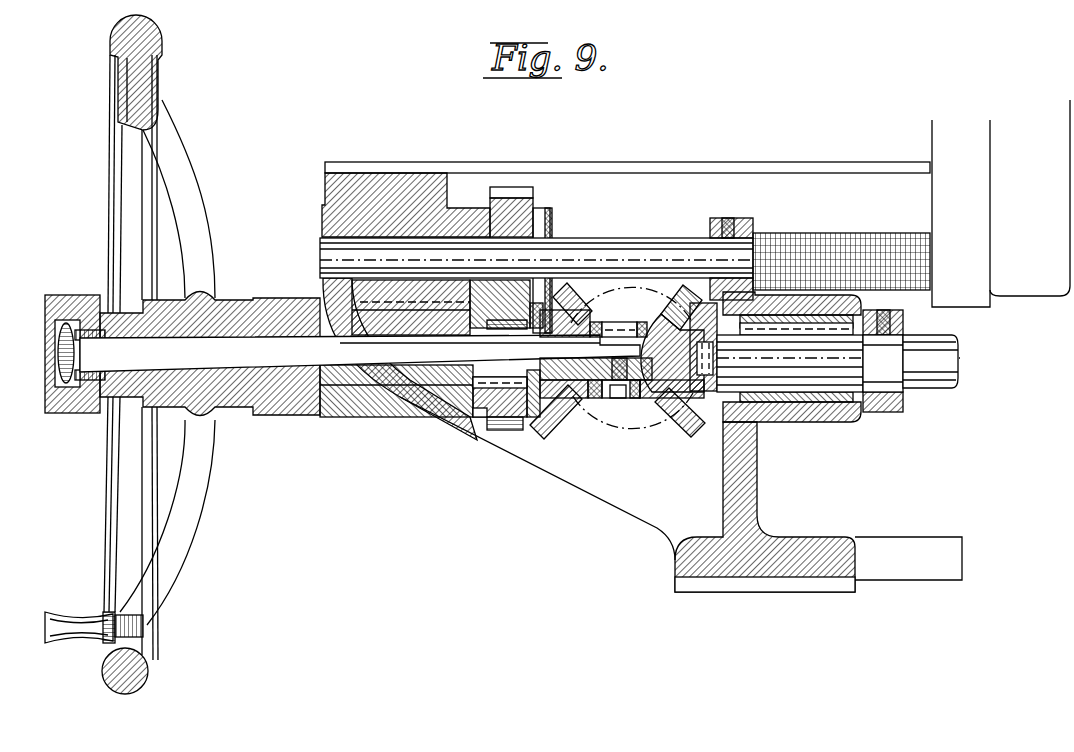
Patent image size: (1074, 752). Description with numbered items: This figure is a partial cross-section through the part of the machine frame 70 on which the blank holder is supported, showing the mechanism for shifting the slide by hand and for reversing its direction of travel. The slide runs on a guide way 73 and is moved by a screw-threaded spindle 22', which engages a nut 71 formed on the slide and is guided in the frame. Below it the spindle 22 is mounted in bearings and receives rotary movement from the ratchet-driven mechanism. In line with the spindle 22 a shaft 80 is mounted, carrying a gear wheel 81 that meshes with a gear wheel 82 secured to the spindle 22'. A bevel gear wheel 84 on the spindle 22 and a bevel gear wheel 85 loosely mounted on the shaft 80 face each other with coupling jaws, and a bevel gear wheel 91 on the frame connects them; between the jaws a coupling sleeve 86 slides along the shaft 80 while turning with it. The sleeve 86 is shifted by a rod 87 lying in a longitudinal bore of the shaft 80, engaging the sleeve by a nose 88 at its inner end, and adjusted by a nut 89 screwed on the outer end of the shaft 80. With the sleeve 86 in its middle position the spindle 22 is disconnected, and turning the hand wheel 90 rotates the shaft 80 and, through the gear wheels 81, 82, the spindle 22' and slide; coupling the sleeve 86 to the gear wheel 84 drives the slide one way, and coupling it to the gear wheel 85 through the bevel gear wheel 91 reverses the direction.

The spindle 22 is at (828, 364).
The screw-threaded spindle 22' is at (625, 245).
The frame 70 is at (748, 478).
The frame bracket 71 is at (945, 150).
The guide way 73 is at (378, 170).
The shaft 80 is at (426, 408).
The gear wheel 81 is at (472, 420).
The gear wheel 82 is at (515, 218).
The bevel gear wheel 84 is at (695, 418).
The bevel gear wheel 85 is at (562, 415).
The coupling sleeve 86 is at (625, 398).
The rod 87 is at (360, 353).
The nose 88 is at (613, 335).
The nut 89 is at (60, 352).
The hand wheel 90 is at (205, 485).
The bevel gear wheel 91 is at (643, 427).